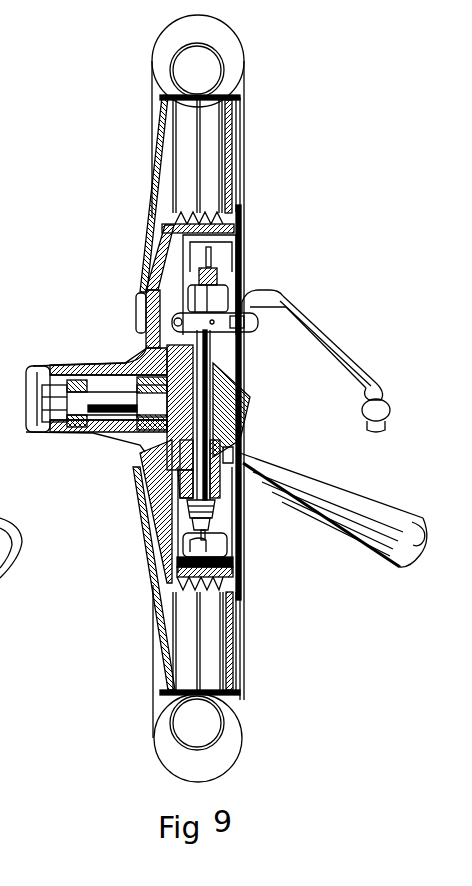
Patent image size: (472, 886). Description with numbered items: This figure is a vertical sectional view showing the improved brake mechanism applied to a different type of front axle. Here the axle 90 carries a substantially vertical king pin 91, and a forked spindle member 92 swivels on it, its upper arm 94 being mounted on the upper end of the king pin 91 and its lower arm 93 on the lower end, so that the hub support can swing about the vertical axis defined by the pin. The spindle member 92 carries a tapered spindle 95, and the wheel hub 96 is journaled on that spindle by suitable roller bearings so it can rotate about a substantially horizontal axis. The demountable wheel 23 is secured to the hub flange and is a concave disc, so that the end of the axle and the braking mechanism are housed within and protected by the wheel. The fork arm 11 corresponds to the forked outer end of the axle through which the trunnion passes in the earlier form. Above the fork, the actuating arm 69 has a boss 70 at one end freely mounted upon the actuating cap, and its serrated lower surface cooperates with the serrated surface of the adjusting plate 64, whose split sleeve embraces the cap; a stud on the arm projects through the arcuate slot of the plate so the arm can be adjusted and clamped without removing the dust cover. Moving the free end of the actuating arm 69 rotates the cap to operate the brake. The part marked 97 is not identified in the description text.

The fork arm 11 is at (255, 282).
The demountable wheel 23 is at (150, 583).
The adjusting plate 64 is at (180, 316).
The actuating arm 69 is at (312, 332).
The boss 70 is at (262, 285).
The axle 90 is at (250, 447).
The king pin 91 is at (242, 375).
The spindle member 92 is at (143, 447).
The lower arm 93 is at (243, 462).
The upper arm 94 is at (247, 340).
The tapered spindle 95 is at (117, 413).
The wheel hub 96 is at (95, 363).
The casing wall 97 is at (133, 498).